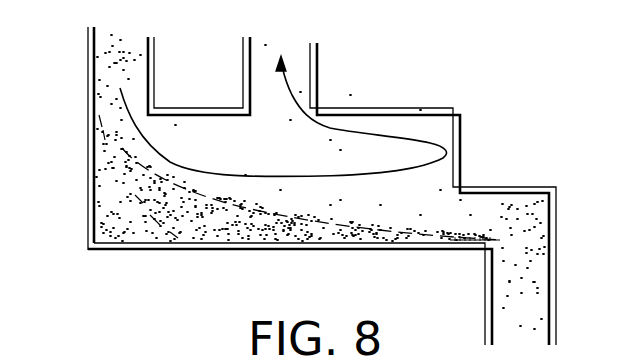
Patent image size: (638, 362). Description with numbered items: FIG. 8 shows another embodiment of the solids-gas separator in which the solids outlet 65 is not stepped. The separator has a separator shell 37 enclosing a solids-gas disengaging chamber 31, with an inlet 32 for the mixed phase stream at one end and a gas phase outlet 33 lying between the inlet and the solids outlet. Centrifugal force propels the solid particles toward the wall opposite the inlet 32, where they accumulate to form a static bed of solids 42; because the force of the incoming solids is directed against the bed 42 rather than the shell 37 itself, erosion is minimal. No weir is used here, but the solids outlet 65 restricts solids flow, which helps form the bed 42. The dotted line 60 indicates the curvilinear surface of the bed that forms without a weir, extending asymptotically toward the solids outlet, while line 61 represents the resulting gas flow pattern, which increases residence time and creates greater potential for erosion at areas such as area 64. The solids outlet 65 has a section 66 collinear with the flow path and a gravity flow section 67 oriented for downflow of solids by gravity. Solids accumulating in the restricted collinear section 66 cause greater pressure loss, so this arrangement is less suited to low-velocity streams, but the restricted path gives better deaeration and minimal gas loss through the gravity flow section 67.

The solids-gas disengaging chamber 31 is at (240, 151).
The inlet 32 is at (117, 52).
The gas phase outlet 33 is at (293, 48).
The separator shell 37 is at (193, 108).
The static bed of solids 42 is at (118, 191).
The dotted line 60 is at (333, 225).
The flow pattern line 61 is at (381, 135).
The erosion area 64 is at (318, 108).
The solids outlet 65 is at (516, 218).
The collinear section 66 is at (480, 220).
The gravity flow section 67 is at (530, 286).